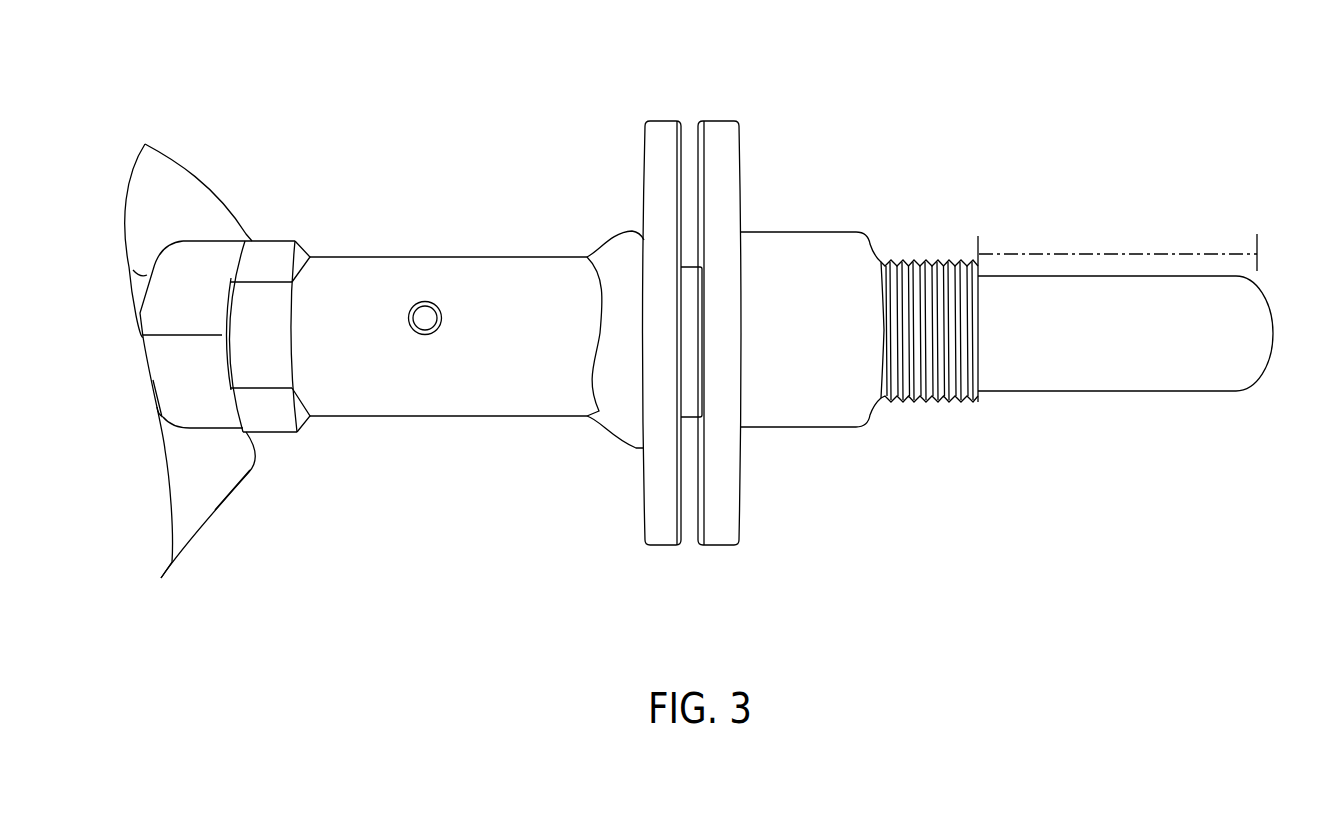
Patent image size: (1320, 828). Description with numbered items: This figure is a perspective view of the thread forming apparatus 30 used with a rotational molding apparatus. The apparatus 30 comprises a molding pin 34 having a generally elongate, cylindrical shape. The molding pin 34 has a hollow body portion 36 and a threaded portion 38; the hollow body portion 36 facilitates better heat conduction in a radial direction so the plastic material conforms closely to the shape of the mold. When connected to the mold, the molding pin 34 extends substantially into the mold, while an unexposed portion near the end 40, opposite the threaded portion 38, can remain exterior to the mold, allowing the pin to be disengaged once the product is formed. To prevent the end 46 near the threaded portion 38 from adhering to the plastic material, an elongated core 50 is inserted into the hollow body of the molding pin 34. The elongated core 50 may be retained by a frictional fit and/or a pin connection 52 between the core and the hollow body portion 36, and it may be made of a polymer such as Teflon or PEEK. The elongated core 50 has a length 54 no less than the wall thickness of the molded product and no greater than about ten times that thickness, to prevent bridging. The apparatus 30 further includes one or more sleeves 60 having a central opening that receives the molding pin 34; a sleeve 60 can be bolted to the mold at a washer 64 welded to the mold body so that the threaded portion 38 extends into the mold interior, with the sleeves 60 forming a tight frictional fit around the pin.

The thread forming apparatus 30 is at (1040, 92).
The molding pin 34 is at (440, 257).
The hollow body portion 36 is at (790, 229).
The threaded portion 38 is at (919, 260).
The end 40 is at (266, 258).
The end 46 is at (975, 400).
The elongated core 50 is at (1072, 391).
The pin connection 52 is at (423, 333).
The length 54 is at (1130, 252).
The sleeve 60 is at (718, 121).
The washer 64 is at (663, 538).